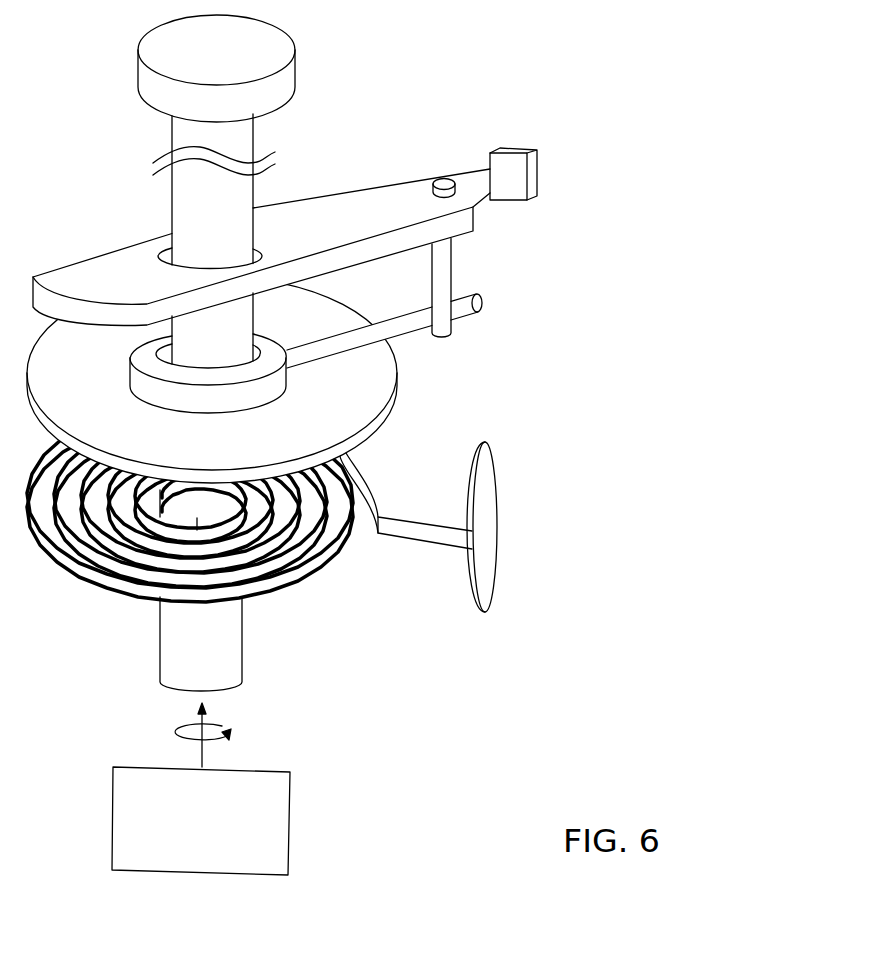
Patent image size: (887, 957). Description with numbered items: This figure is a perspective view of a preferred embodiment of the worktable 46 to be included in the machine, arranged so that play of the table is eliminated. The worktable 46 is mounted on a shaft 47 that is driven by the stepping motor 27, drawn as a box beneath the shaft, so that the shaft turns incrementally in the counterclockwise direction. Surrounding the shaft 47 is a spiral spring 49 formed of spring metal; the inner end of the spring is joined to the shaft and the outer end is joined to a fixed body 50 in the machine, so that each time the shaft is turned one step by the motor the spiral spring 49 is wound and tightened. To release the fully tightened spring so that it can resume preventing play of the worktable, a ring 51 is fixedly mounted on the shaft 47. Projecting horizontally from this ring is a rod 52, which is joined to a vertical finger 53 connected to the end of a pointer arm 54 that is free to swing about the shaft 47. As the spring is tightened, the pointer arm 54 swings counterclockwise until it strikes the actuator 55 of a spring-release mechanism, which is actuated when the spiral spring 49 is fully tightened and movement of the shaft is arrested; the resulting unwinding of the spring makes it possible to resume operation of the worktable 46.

The worktable 46 is at (273, 47).
The shaft 47 is at (167, 202).
The pointer arm 54 is at (362, 197).
The actuator 55 is at (517, 150).
The vertical finger 53 is at (451, 277).
The rod 52 is at (410, 335).
The ring 51 is at (263, 393).
The spiral spring 49 is at (297, 590).
The fixed body 50 is at (463, 502).
The stepping motor 27 is at (290, 823).